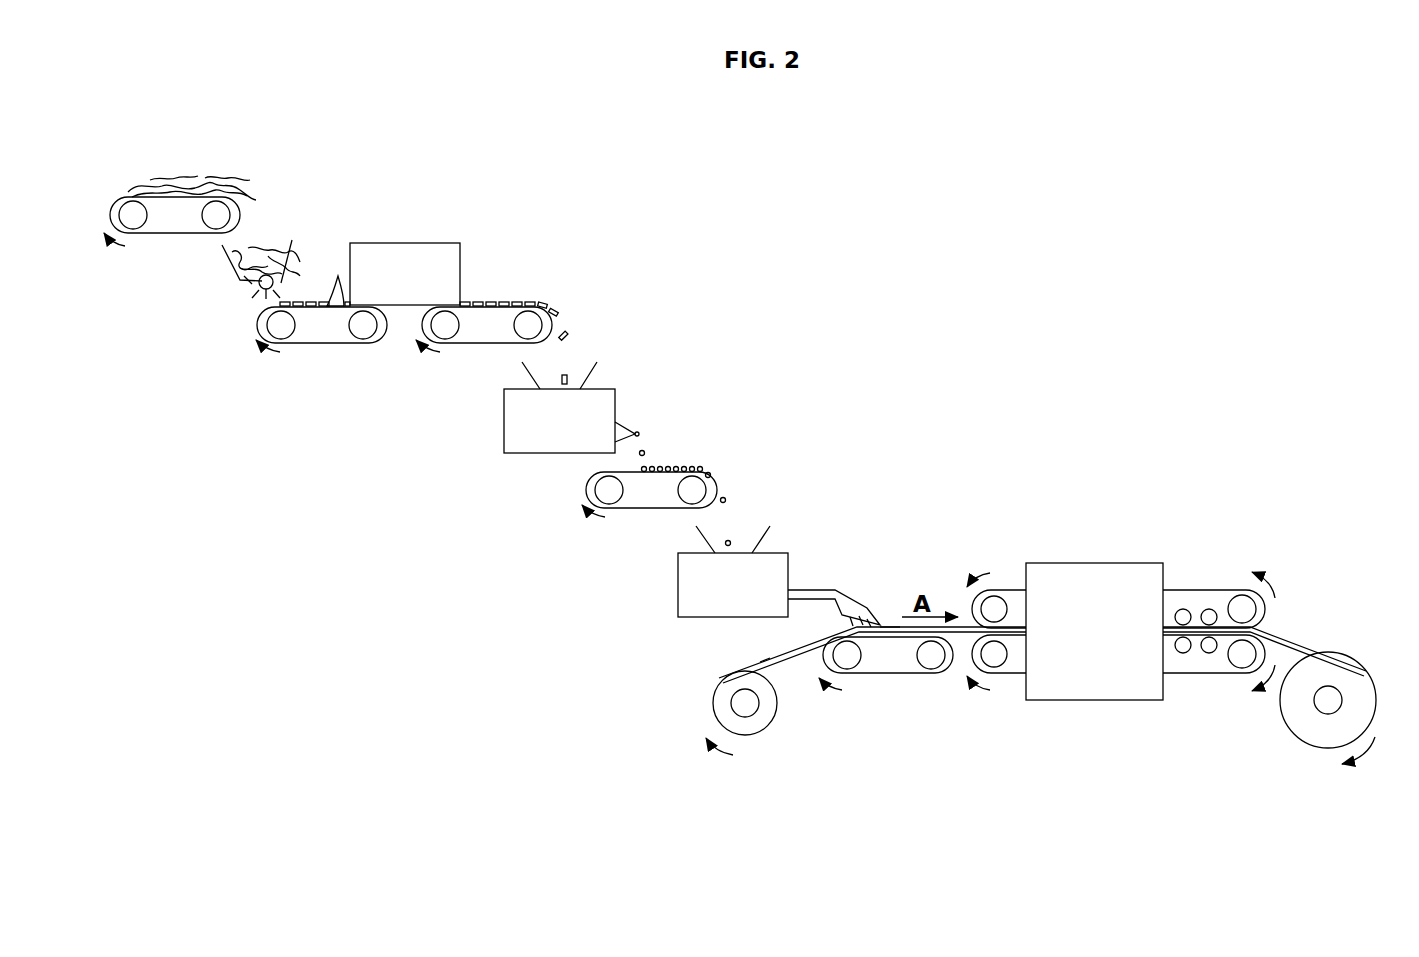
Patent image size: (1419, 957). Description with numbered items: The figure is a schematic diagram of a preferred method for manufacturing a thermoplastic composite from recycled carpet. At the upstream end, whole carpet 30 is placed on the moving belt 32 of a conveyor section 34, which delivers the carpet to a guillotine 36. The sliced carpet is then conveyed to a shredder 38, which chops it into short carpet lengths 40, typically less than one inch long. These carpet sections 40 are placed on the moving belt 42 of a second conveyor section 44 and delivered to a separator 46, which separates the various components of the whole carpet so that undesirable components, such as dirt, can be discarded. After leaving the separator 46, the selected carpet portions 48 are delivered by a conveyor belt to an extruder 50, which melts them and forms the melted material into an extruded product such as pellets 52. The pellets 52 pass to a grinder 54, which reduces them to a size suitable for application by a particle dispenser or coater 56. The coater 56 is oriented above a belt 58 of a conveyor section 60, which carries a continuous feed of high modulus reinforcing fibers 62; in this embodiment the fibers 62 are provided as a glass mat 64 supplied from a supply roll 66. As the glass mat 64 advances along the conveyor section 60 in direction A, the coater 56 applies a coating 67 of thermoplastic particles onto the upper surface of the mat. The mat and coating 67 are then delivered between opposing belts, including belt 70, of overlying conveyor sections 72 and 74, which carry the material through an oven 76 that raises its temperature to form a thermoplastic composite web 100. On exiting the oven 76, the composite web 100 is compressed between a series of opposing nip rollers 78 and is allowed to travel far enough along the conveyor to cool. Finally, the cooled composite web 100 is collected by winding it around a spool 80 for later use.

The whole carpet 30 is at (254, 242).
The moving belt 32 is at (195, 233).
The conveyor section 34 is at (132, 292).
The guillotine 36 is at (300, 280).
The shredder 38 is at (252, 285).
The carpet lengths 40 is at (330, 275).
The moving belt 42 is at (340, 345).
The conveyor section 44 is at (282, 398).
The separator 46 is at (407, 243).
The selected carpet portions 48 is at (515, 300).
The extruder 50 is at (616, 398).
The pellets 52 is at (643, 451).
The grinder 54 is at (790, 562).
The particle dispenser 56 is at (858, 602).
The belt 58 is at (925, 674).
The conveyor section 60 is at (858, 732).
The reinforcing fibers 62 is at (815, 641).
The glass mat 64 is at (770, 661).
The supply roll 66 is at (688, 731).
The coating of thermoplastic particles 67 is at (890, 627).
The belt 70 is at (1017, 674).
The conveyor section 72 is at (977, 539).
The conveyor section 74 is at (978, 736).
The oven 76 is at (1110, 562).
The nip rollers 78 is at (1209, 608).
The spool 80 is at (1247, 749).
The thermoplastic composite web 100 is at (1288, 636).